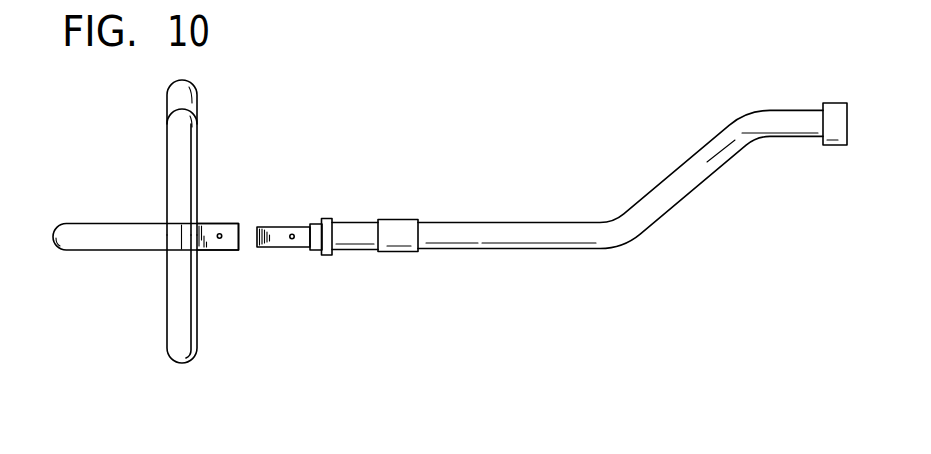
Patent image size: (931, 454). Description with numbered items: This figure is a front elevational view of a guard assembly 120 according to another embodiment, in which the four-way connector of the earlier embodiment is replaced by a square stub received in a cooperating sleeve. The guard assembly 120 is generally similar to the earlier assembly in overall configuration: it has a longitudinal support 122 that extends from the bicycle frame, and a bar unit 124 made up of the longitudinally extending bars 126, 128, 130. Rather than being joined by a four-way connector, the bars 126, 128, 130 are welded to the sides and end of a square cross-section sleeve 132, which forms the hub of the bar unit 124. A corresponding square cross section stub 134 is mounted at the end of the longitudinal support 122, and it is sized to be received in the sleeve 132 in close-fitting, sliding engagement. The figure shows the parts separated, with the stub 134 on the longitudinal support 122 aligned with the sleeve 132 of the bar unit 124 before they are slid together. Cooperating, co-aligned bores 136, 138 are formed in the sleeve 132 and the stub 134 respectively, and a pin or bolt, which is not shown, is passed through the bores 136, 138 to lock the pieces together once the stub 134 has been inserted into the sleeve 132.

The guard assembly 120 is at (552, 196).
The longitudinal support 122 is at (520, 218).
The bar unit 124 is at (167, 221).
The longitudinally extending bar 126 is at (87, 228).
The longitudinally extending bar 128 is at (172, 333).
The longitudinally extending bar 130 is at (170, 147).
The square cross-section sleeve 132 is at (239, 235).
The square cross section stub 134 is at (308, 236).
The bore 136 is at (220, 238).
The bore 138 is at (293, 239).